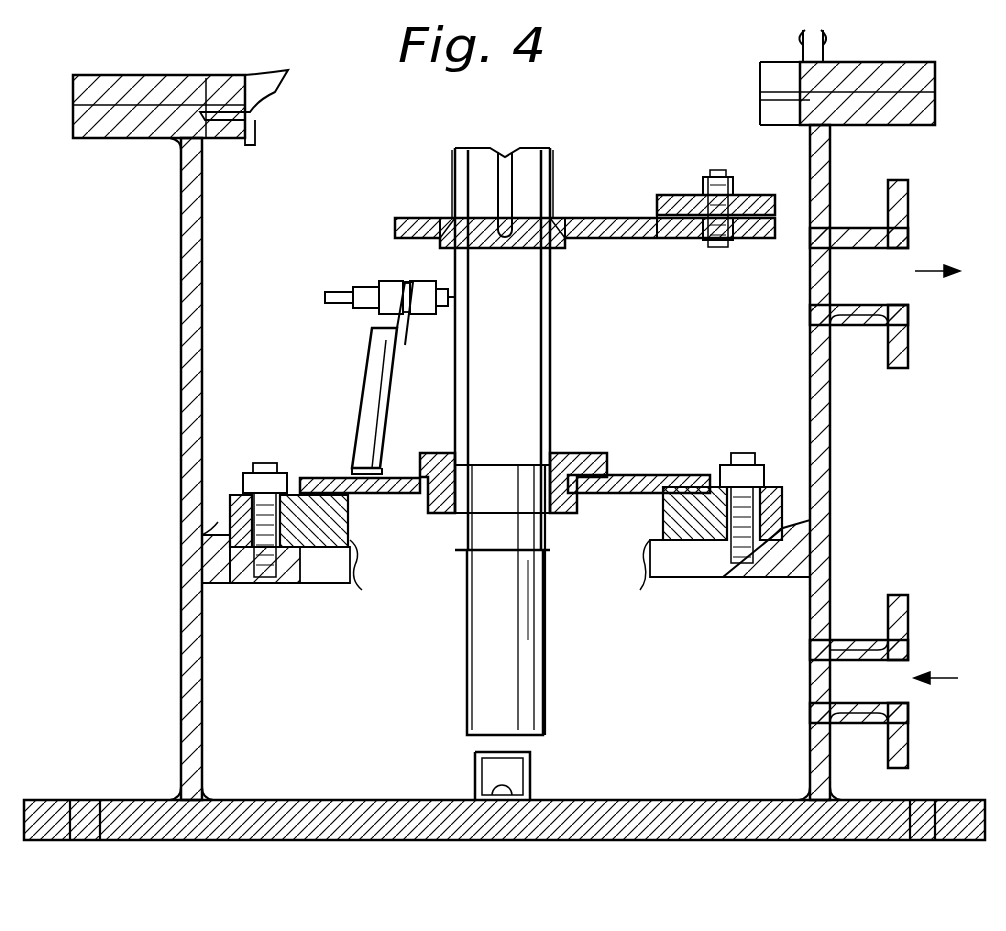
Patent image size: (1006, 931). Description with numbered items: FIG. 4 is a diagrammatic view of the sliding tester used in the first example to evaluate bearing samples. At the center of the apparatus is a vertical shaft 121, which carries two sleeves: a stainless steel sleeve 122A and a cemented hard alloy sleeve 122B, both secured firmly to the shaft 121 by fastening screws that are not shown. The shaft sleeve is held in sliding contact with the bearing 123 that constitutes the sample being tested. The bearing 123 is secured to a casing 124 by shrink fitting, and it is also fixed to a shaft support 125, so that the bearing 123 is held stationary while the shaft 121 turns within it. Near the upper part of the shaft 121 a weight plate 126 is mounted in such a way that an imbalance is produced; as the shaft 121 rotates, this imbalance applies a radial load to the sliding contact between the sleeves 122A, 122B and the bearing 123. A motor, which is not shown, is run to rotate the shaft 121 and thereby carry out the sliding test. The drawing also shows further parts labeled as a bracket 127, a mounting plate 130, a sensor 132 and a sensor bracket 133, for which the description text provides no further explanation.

The shaft 121 is at (200, 547).
The SUS 304 sleeve 122A is at (538, 505).
The cemented hard alloy sleeve 122B is at (546, 608).
The bearing 123 is at (538, 470).
The casing 124 is at (608, 453).
The shaft support 125 is at (603, 494).
The weight plate 126 is at (600, 218).
The mounting bracket 127 is at (755, 195).
The mounting plate 130 is at (300, 482).
The sensor 132 is at (410, 282).
The sensor bracket 133 is at (358, 420).